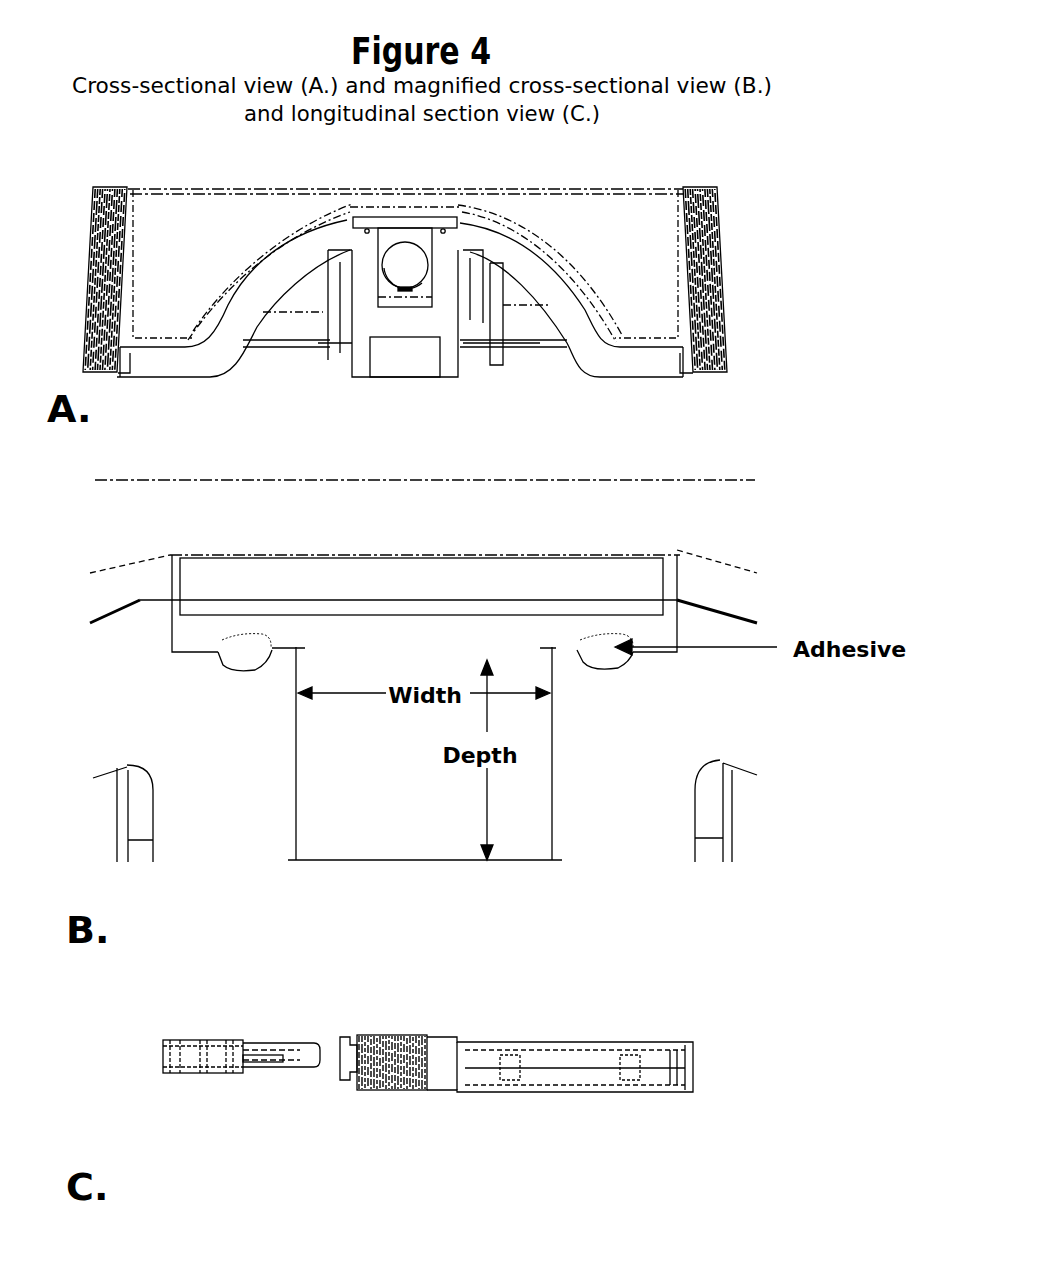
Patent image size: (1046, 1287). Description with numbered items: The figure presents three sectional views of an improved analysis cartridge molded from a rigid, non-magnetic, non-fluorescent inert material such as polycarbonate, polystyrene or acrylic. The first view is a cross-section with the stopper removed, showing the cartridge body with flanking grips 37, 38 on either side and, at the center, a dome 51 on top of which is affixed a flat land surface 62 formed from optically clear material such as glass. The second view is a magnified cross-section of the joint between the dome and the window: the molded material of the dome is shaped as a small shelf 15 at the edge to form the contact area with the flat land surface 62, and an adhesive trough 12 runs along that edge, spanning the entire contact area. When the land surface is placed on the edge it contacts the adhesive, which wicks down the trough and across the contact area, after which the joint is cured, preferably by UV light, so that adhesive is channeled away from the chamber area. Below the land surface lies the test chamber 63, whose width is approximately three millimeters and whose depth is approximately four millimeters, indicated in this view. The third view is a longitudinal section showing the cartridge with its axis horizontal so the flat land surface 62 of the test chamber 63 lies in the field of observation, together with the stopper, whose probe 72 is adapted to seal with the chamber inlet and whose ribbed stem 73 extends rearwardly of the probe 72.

In FIG. 4B, the adhesive trough 12 is at (232, 663).
In FIG. 4B, the shelf 15 is at (178, 662).
In FIG. 4A, the grip 37 is at (725, 275).
In FIG. 4A, the grip 38 is at (100, 300).
In FIG. 4A, the dome 51 is at (540, 283).
In FIG. 4A, the flat land surface 62 is at (407, 228).
In FIG. 4B, the flat land surface 62 is at (522, 572).
In FIG. 4C, the flat land surface 62 is at (578, 1043).
In FIG. 4A, the test chamber 63 is at (420, 248).
In FIG. 4B, the test chamber 63 is at (323, 770).
In FIG. 4C, the test chamber 63 is at (672, 1060).
In FIG. 4C, the probe 72 is at (307, 1060).
In FIG. 4C, the ribbed stem 73 is at (268, 1062).